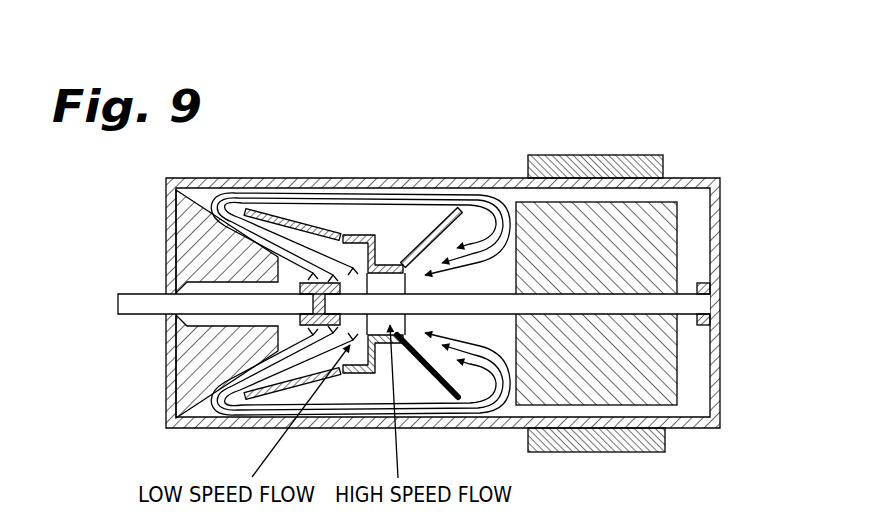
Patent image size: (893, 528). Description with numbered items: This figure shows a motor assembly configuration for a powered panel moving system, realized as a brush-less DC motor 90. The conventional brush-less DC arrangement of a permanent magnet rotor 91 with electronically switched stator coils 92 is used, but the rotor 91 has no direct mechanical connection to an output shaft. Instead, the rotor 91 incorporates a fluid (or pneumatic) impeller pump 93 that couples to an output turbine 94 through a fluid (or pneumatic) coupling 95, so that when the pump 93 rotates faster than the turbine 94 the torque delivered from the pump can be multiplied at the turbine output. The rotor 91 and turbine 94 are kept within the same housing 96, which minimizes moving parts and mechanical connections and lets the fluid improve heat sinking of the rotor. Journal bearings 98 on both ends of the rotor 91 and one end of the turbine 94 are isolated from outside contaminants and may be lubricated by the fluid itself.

The brush-less DC motor 90 is at (614, 64).
The permanent magnet rotor 91 is at (634, 212).
The stator coils 92 is at (566, 166).
The impeller pump 93 is at (434, 220).
The output turbine 94 is at (290, 285).
The fluid coupling 95 is at (368, 205).
The housing 96 is at (482, 178).
The journal bearings 98 is at (290, 276).